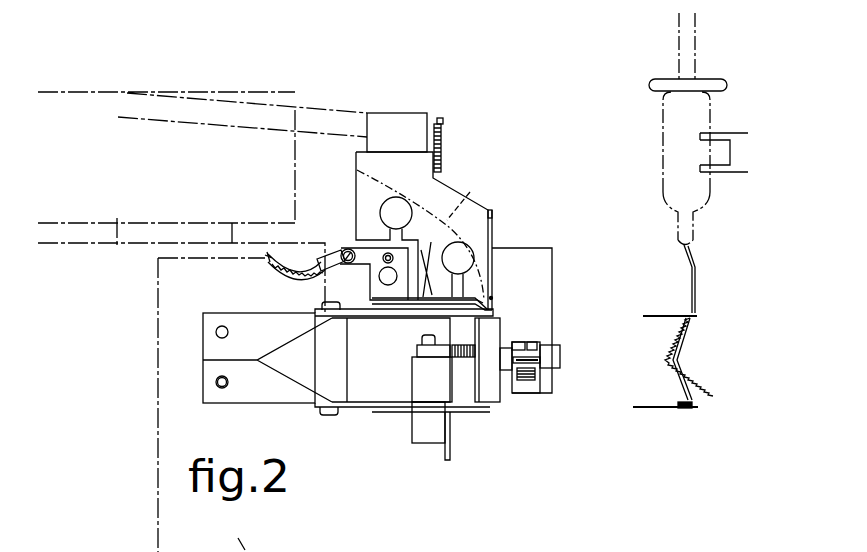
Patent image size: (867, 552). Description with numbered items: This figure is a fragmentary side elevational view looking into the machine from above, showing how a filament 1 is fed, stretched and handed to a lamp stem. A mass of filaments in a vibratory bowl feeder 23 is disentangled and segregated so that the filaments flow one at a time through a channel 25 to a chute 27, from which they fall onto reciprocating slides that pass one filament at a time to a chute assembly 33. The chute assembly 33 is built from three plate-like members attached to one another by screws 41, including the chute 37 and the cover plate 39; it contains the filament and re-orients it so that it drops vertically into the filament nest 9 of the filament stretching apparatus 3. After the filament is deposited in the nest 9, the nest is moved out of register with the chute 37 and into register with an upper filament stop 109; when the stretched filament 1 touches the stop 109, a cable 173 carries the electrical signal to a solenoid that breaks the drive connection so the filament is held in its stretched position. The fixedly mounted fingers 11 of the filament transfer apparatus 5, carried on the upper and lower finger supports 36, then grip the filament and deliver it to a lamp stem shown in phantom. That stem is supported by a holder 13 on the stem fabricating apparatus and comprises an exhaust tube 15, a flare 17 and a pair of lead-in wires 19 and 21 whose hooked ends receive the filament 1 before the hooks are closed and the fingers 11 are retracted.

The filament 1 is at (692, 350).
The filament stretching apparatus 3 is at (565, 337).
The filament transfer apparatus 5 is at (300, 406).
The filament nest 9 is at (483, 397).
The fingers 11 is at (405, 313).
The holder 13 is at (742, 132).
The exhaust tube 15 is at (678, 60).
The flare 17 is at (662, 125).
The lead-in wire 19 is at (696, 262).
The lead-in wire 21 is at (673, 363).
The vibratory bowl feeder 23 is at (108, 250).
The channel 25 is at (334, 108).
The chute 27 is at (407, 114).
The chute assembly 33 is at (489, 206).
The finger supports 36 is at (210, 349).
The chute 37 is at (465, 198).
The cover plate 39 is at (448, 190).
The screws 41 is at (380, 214).
The upper filament stop 109 is at (434, 262).
The cable 173 is at (291, 277).